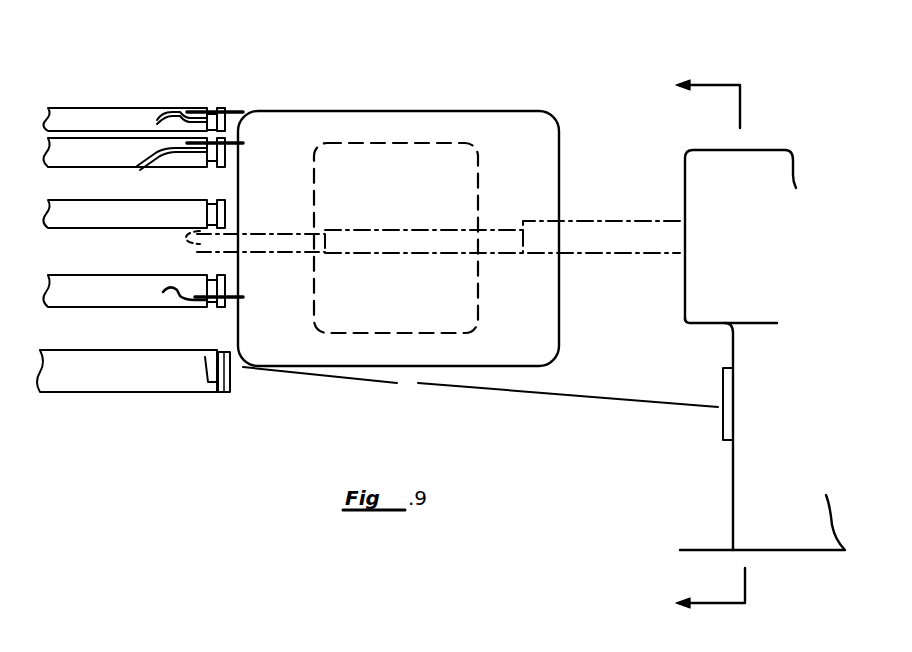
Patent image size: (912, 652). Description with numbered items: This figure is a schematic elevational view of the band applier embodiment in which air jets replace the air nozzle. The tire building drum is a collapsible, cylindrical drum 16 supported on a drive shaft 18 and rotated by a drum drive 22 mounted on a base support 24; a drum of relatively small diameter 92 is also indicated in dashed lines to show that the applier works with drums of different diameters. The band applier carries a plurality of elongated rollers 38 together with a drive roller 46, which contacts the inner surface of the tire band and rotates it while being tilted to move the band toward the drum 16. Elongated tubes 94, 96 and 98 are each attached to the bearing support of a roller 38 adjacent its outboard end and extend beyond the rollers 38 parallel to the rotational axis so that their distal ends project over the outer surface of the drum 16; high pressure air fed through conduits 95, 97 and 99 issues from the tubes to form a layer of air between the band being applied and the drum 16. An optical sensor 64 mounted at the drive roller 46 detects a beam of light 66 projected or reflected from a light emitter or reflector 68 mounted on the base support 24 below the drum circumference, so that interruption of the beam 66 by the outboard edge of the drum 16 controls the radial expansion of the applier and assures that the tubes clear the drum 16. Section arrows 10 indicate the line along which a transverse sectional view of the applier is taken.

The section line 10- 10 is at (690, 349).
The tire building drum 16 is at (445, 111).
The drive shaft 18 is at (612, 220).
The drum drive 22 is at (683, 153).
The base support 24 is at (750, 470).
The rollers 38 is at (95, 107).
The drive roller 46 is at (108, 362).
The optical sensor 64 is at (209, 384).
The beam of light 66 is at (447, 389).
The light emitter or reflector 68 is at (722, 384).
The small diameter drum 92 is at (340, 143).
The elongated tube 94 is at (238, 108).
The conduit 95 is at (160, 118).
The elongated tube 96 is at (248, 143).
The conduit 97 is at (155, 154).
The elongated tube 98 is at (238, 297).
The conduit 99 is at (175, 290).